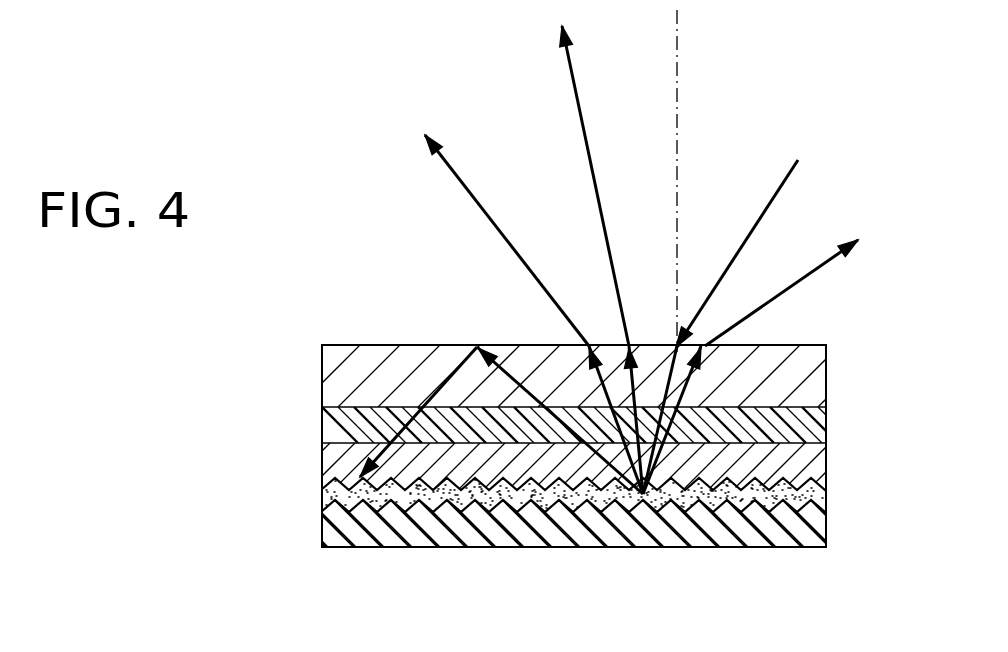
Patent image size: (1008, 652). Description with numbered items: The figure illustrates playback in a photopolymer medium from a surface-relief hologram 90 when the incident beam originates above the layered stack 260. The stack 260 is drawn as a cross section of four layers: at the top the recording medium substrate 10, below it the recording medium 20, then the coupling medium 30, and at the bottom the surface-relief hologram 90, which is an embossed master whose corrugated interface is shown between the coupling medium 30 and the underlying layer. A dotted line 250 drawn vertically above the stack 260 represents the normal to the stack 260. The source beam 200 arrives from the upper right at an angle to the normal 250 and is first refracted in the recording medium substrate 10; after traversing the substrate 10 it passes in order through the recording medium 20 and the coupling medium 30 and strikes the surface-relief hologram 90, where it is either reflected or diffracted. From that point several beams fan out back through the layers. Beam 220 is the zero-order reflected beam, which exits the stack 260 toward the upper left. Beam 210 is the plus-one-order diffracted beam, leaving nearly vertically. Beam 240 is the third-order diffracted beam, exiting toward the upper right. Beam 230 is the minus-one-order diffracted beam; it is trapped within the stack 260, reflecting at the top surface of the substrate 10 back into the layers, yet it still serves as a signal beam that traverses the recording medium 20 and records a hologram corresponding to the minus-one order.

The recording medium substrate 10 is at (322, 373).
The recording medium 20 is at (322, 419).
The coupling medium 30 is at (322, 464).
The surface-relief hologram 90 is at (297, 480).
The source beam 200 is at (785, 177).
The m=+1 diffracted beam 210 is at (572, 83).
The m=0 reflected beam 220 is at (467, 188).
The m=-1 diffracted beam 230 is at (537, 405).
The m=3 diffracted beam 240 is at (808, 273).
The normal 250 is at (678, 54).
The stack 260 is at (833, 348).